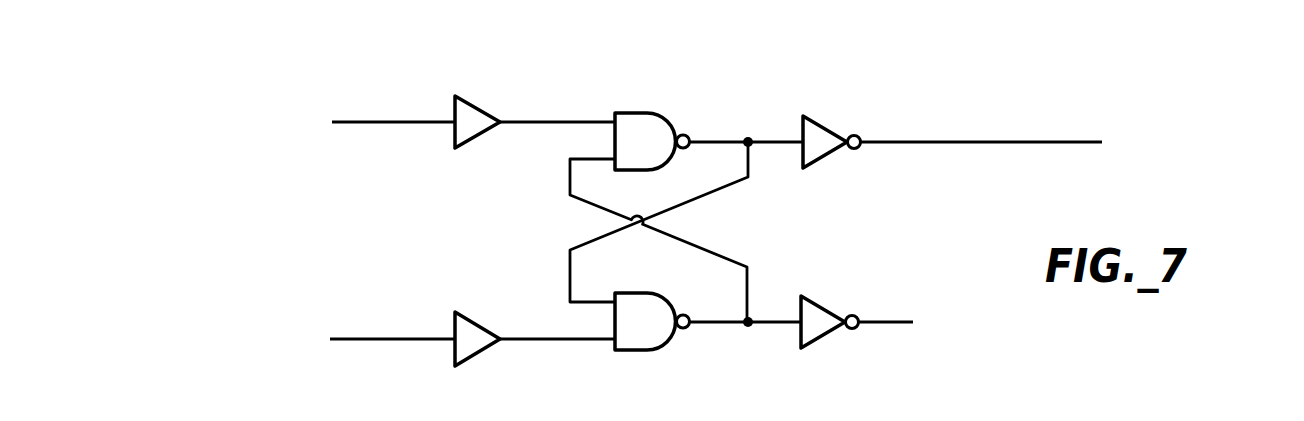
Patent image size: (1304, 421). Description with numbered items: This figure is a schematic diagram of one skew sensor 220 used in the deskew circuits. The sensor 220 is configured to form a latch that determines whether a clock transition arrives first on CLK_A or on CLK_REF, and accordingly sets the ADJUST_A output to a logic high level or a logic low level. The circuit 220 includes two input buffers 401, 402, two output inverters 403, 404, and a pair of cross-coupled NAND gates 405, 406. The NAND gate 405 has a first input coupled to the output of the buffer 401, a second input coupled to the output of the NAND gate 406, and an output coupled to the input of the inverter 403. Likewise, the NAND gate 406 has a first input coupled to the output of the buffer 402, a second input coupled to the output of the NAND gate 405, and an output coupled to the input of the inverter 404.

The skew sensor 220 is at (388, 48).
The input buffer 401 is at (473, 100).
The input buffer 402 is at (471, 320).
The output inverter 403 is at (818, 120).
The output inverter 404 is at (817, 298).
The NAND gate 405 is at (632, 113).
The NAND gate 406 is at (632, 293).